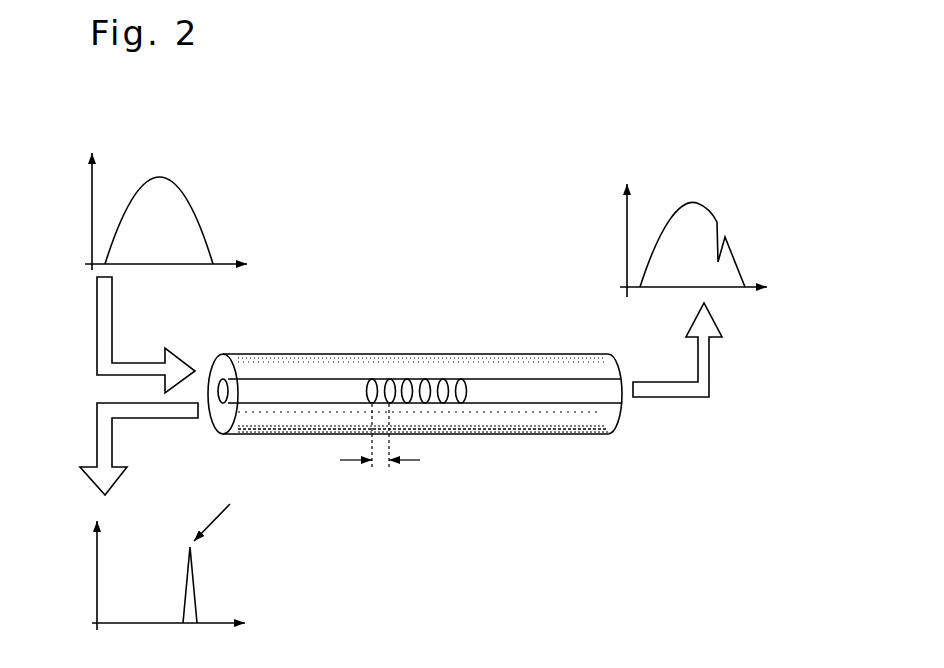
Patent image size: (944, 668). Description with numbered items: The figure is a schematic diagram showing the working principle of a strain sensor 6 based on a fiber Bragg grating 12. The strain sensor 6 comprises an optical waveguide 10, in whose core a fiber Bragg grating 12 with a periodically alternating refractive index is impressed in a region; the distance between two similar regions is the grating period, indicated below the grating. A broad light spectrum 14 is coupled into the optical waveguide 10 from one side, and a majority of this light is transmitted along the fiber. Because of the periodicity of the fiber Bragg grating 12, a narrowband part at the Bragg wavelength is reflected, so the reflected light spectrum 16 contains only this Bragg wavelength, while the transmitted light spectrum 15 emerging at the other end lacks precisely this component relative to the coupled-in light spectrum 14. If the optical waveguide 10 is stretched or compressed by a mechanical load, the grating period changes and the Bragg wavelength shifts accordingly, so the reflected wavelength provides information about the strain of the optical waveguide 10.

The strain sensor 6 is at (457, 490).
The optical waveguide 10 is at (519, 437).
The fiber Bragg grating 12 is at (404, 376).
The broad light spectrum 14 is at (193, 195).
The transmitted light spectrum 15 is at (713, 191).
The reflected light spectrum 16 is at (208, 580).